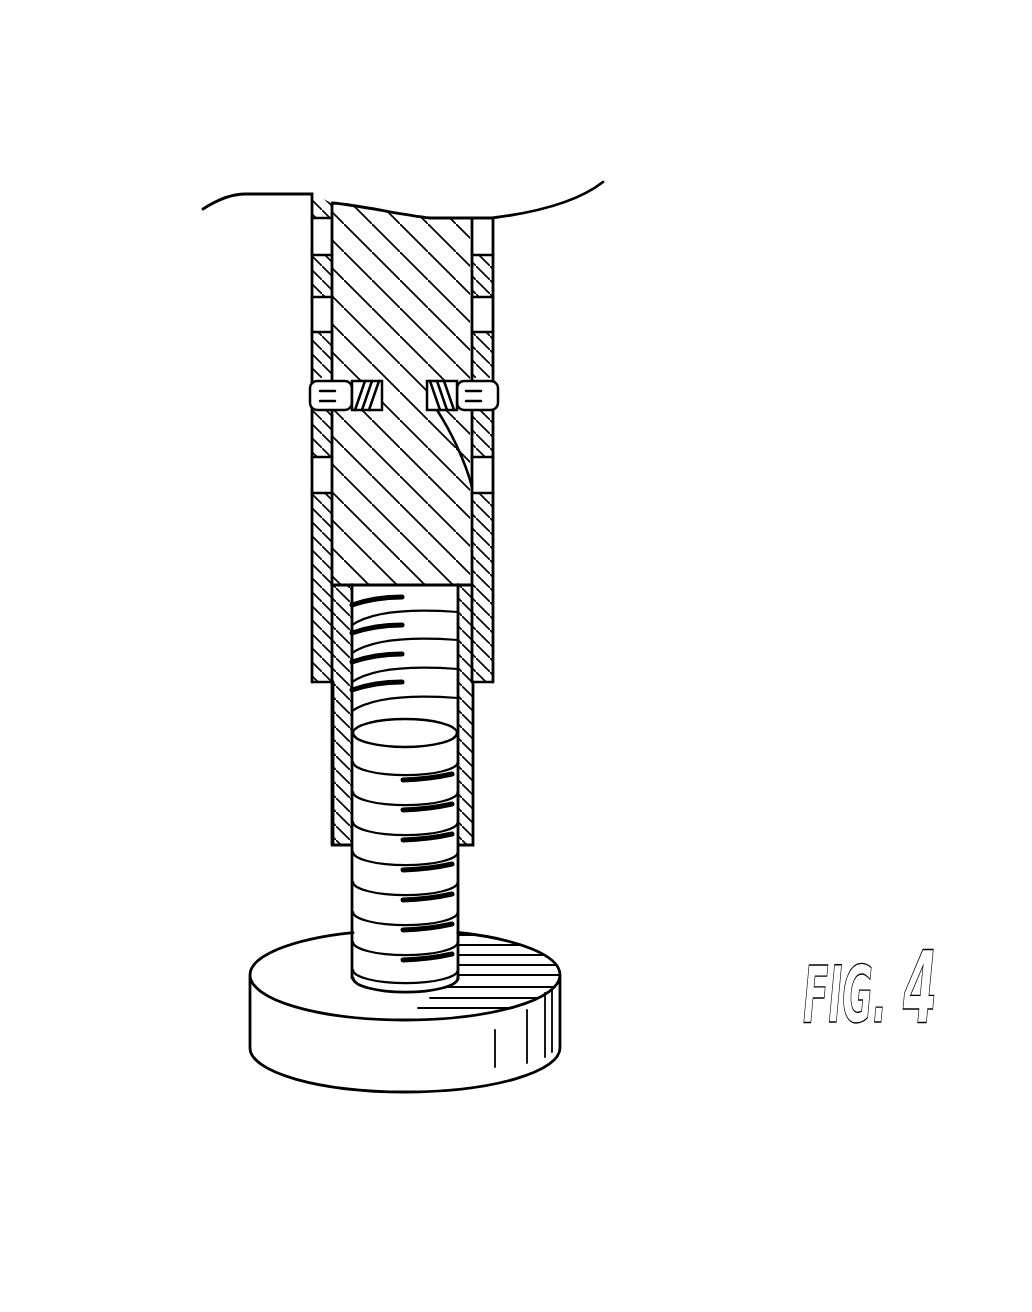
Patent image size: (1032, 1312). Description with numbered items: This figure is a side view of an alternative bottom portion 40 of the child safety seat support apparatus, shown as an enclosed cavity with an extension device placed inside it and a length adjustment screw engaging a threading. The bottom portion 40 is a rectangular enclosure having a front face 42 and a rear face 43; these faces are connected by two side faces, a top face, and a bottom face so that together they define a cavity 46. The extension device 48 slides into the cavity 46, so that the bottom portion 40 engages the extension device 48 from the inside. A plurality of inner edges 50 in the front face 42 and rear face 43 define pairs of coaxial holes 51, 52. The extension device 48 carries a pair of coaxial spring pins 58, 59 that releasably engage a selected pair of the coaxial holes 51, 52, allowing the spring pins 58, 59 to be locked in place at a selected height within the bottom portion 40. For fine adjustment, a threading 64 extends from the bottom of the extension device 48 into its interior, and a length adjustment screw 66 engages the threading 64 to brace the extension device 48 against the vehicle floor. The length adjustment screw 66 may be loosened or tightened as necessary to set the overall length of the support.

The bottom portion 40 is at (495, 344).
The front face 42 is at (495, 594).
The rear face 43 is at (313, 437).
The cavity 46 is at (472, 218).
The extension device 48 is at (406, 250).
The inner edges 50 is at (495, 313).
The coaxial hole 51 is at (495, 494).
The coaxial hole 52 is at (367, 378).
The spring pin 58 is at (495, 385).
The spring pin 59 is at (310, 392).
The threading 64 is at (360, 613).
The length adjustment screw 66 is at (383, 1063).